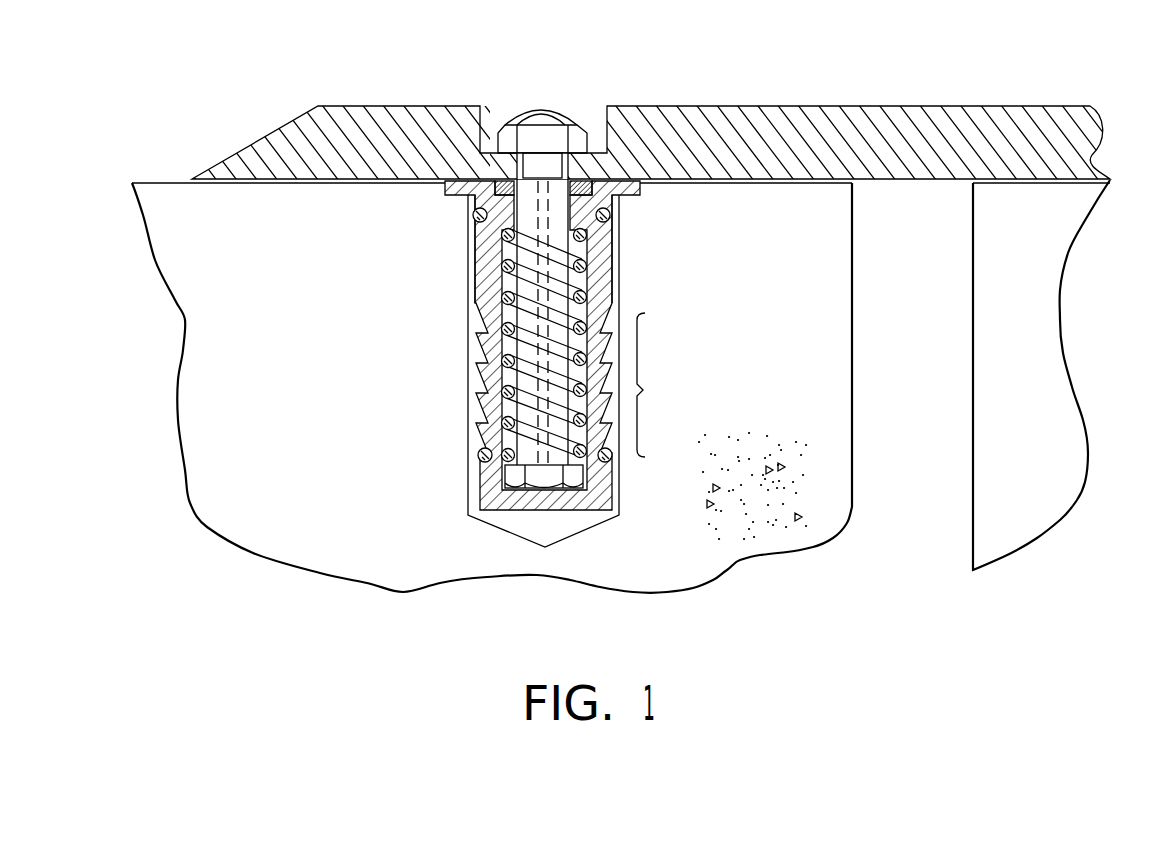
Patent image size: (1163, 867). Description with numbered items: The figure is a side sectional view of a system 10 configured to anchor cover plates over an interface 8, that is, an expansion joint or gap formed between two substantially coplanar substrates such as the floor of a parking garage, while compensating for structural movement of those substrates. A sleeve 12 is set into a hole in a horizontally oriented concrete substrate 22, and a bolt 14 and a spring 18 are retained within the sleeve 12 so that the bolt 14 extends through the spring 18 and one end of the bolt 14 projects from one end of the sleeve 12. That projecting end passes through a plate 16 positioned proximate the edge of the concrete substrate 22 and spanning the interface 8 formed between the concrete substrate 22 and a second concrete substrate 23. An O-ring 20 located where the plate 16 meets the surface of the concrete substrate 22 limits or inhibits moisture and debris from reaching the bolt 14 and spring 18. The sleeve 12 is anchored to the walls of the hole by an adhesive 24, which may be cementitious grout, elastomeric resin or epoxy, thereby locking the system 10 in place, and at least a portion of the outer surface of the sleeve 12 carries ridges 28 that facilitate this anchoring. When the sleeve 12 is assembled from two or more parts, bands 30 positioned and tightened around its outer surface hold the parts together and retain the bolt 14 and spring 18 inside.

The interface 8 is at (902, 198).
The system 10 is at (487, 269).
The sleeve 12 is at (482, 383).
The bolt 14 is at (575, 300).
The plate 16 is at (715, 103).
The spring 18 is at (480, 292).
The O-ring 20 is at (325, 204).
The concrete substrate 22 is at (853, 217).
The second concrete substrate 23 is at (977, 440).
The adhesive 24 is at (527, 523).
The ridges 28 is at (643, 391).
The bands 30 is at (478, 213).